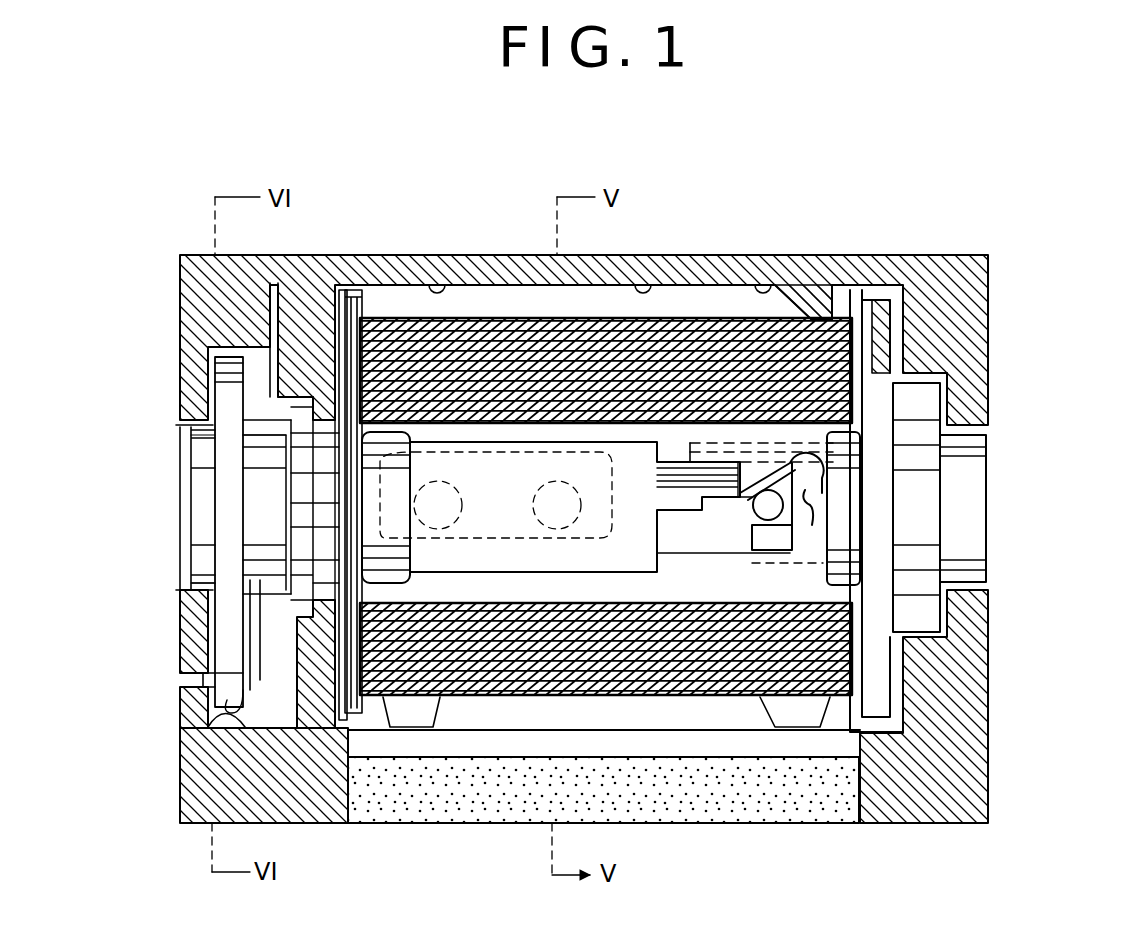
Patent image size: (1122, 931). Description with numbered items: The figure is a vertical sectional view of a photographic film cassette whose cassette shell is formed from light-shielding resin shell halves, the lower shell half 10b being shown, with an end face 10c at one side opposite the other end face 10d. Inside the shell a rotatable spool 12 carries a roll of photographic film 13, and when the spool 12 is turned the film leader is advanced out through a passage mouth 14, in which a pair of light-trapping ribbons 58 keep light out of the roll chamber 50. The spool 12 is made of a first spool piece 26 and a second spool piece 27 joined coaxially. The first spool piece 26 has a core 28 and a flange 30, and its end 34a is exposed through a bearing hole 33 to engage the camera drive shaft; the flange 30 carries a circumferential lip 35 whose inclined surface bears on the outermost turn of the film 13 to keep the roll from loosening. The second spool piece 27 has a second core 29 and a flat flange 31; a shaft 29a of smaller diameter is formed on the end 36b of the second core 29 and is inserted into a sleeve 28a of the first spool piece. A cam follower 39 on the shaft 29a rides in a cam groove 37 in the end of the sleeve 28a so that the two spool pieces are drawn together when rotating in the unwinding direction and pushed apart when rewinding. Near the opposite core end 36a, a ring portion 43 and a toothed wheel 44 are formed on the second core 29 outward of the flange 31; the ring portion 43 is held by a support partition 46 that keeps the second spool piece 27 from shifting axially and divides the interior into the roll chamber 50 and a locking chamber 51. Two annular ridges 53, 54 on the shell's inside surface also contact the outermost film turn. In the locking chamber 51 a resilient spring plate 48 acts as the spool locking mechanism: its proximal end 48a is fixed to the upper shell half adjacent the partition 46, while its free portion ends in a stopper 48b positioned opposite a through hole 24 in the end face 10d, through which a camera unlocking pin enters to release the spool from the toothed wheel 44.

The lower shell half 10b is at (960, 765).
The end face 10c is at (990, 645).
The end face 10d is at (180, 614).
The spool 12 is at (780, 135).
The photographic film 13 is at (703, 690).
The passage mouth 14 is at (408, 830).
The through hole 24 is at (192, 693).
The first spool piece 26 is at (745, 440).
The second spool piece 27 is at (490, 470).
The core 28 is at (772, 560).
The sleeve 28a is at (990, 452).
The second core 29 is at (545, 563).
The shaft 29a is at (712, 548).
The flange 30 is at (862, 256).
The flat flange 31 is at (392, 563).
The bearing hole 33 is at (988, 586).
The end of first spool piece 34a is at (992, 542).
The circumferential lip 35 is at (850, 740).
The core end 36a is at (199, 458).
The end of second core 36b is at (640, 520).
The cam groove 37 is at (805, 500).
The cam follower 39 is at (745, 530).
The ring portion 43 is at (296, 486).
The toothed wheel 44 is at (199, 507).
The support partition 46 is at (320, 283).
The spring plate 48 is at (268, 690).
The proximal end 48a is at (270, 306).
The stopper 48b is at (182, 667).
The roll chamber 50 is at (660, 256).
The locking chamber 51 is at (188, 726).
The annular ridge 53 is at (783, 245).
The annular ridge 54 is at (437, 255).
The light-trapping ribbons 58 is at (505, 825).